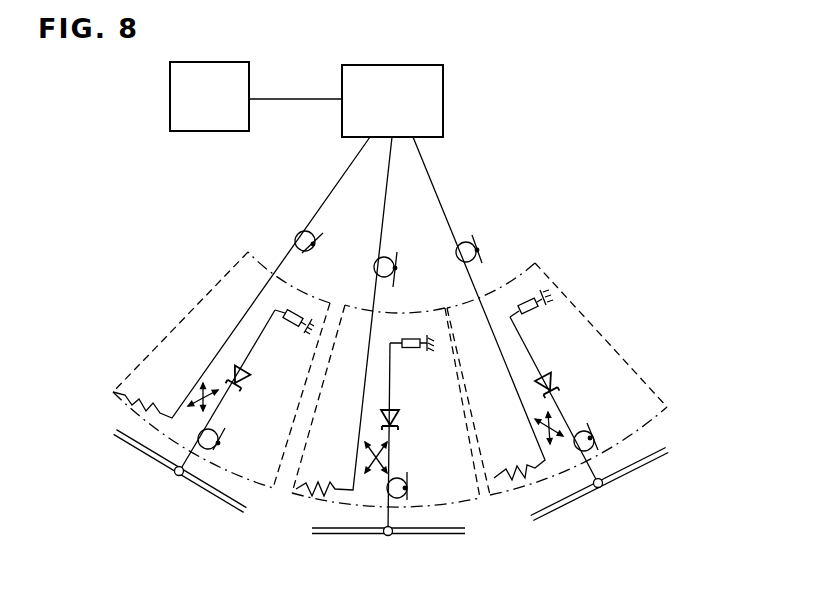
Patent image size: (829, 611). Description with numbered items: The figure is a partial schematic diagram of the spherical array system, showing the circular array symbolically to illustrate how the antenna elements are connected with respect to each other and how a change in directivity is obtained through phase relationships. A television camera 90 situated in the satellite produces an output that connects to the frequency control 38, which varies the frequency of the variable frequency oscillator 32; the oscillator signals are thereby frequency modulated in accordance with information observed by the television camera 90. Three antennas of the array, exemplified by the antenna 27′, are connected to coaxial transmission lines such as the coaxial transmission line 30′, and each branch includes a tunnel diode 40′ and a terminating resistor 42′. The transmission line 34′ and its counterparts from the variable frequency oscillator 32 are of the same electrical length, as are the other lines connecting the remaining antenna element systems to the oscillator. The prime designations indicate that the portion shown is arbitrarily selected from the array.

The television camera 90 is at (233, 131).
The frequency control 38 is at (335, 99).
The variable frequency oscillator 32 is at (442, 108).
The transmission line 34′ is at (338, 182).
The terminating resistor 42′ is at (296, 312).
The tunnel diode 40′ is at (243, 380).
The coaxial transmission line 30′ is at (219, 405).
The antenna 27′ is at (150, 460).